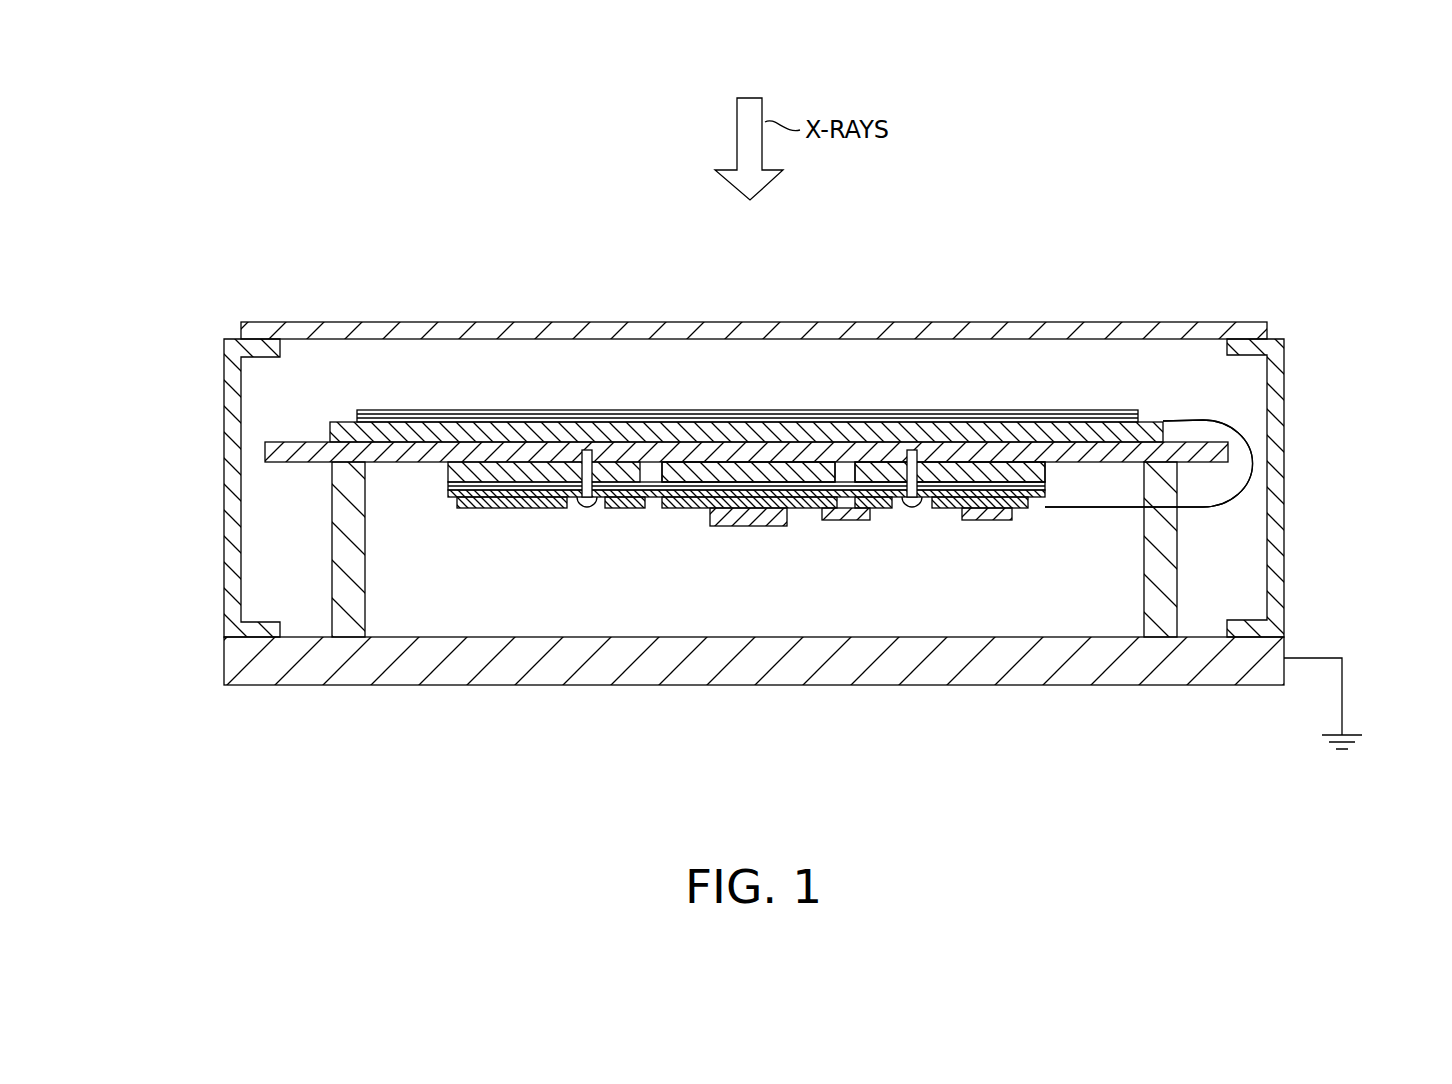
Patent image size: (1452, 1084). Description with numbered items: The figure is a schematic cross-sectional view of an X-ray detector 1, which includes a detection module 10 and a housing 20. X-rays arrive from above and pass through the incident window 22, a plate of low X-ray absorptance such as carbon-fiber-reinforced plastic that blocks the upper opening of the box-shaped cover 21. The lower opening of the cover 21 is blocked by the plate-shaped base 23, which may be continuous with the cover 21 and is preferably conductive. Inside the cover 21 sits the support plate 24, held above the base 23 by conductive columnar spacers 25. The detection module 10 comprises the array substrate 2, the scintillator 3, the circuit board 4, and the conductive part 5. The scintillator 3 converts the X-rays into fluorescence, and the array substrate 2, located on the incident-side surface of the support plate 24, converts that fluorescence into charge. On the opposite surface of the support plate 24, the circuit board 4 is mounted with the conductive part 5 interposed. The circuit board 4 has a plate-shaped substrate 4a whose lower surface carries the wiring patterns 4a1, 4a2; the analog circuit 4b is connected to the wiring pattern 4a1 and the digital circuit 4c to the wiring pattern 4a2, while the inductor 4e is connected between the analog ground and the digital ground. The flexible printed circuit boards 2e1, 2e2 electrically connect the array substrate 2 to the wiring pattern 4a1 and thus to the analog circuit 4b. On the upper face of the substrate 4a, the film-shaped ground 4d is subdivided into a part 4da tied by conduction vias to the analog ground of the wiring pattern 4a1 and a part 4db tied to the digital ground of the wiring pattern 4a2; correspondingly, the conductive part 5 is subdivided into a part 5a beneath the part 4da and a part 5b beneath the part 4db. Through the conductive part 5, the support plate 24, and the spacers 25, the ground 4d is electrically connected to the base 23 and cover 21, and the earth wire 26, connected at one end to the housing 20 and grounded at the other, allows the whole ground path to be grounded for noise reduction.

The X-ray detector 1 is at (162, 146).
The housing 20 is at (678, 503).
The cover 21 is at (233, 488).
The incident window 22 is at (276, 333).
The base 23 is at (268, 650).
The support plate 24 is at (282, 450).
The spacer 25 is at (345, 555).
The earth wire 26 is at (1342, 693).
The detection module 10 is at (881, 390).
The array substrate 2 is at (1152, 425).
The flexible printed circuit board 2e1 is at (1247, 477).
The flexible printed circuit board 2e2 is at (1149, 463).
The scintillator 3 is at (1080, 420).
The circuit board 4 is at (608, 493).
The substrate 4a is at (603, 617).
The wiring pattern 4a1 is at (952, 500).
The wiring pattern 4a2 is at (695, 508).
The analog circuit 4b is at (993, 512).
The digital circuit 4c is at (745, 512).
The ground 4d is at (749, 359).
The part of ground 4da is at (603, 483).
The part of ground 4db is at (688, 483).
The inductor 4e is at (848, 508).
The conductive part 5 is at (746, 346).
The part of conductive part 5a is at (950, 470).
The part of conductive part 5b is at (776, 472).